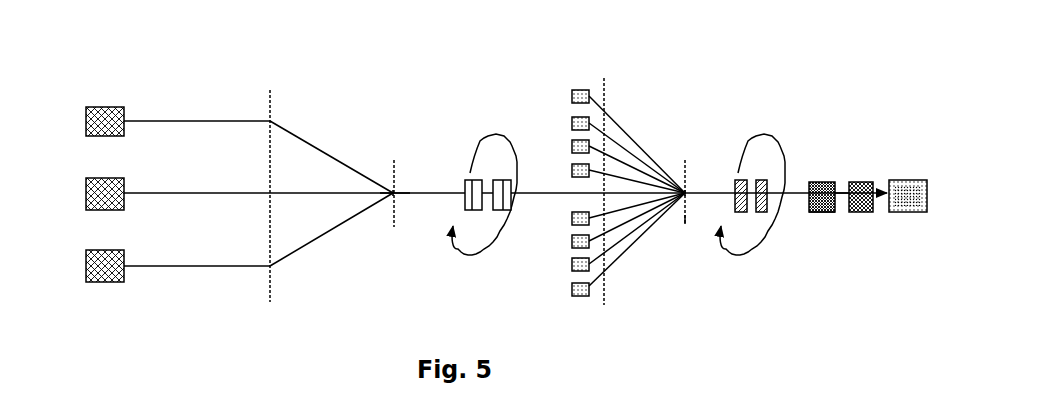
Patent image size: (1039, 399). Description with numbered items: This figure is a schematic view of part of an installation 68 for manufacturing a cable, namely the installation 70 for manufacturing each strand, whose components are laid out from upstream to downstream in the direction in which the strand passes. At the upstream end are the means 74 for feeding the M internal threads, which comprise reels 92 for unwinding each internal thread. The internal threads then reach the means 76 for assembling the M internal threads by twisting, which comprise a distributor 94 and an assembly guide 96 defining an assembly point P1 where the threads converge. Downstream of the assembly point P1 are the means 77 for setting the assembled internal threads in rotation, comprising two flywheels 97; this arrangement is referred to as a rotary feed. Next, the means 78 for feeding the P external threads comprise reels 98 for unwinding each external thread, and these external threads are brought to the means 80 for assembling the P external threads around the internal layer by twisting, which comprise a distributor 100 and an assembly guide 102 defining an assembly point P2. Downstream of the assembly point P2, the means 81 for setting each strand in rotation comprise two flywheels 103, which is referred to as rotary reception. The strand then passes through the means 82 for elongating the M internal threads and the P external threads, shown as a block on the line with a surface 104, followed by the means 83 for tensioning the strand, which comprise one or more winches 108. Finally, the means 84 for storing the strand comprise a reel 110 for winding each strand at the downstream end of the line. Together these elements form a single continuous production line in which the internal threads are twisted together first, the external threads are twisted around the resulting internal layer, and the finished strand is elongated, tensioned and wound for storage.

The installation for manufacturing the cable 68 is at (170, 44).
The installation for manufacturing each strand 70 is at (163, 90).
The reels 92 is at (92, 120).
The means for feeding the M internal threads 74 is at (77, 296).
The distributor 94 is at (270, 283).
The means for assembling the M internal threads 76 is at (396, 146).
The assembly guide 96 is at (395, 228).
The assembly point P1 is at (397, 194).
The means for setting the assembled M internal threads in rotation 77 is at (486, 122).
The flywheels 97 is at (503, 212).
The means for feeding the P external threads 78 is at (577, 81).
The reels 98 is at (580, 298).
The distributor 100 is at (604, 305).
The means for assembling the P external threads 80 is at (684, 138).
The assembly guide 102 is at (685, 225).
The assembly point P2 is at (689, 194).
The means for setting each strand in rotation 81 is at (745, 127).
The flywheels 103 is at (761, 213).
The means for elongating the M internal threads and the P external threads 82 is at (827, 165).
The filter surface 104 is at (815, 213).
The means for tensioning the strand 83 is at (852, 224).
The winches 108 is at (860, 181).
The means for storing the strand 84 is at (905, 165).
The reel 110 is at (907, 200).